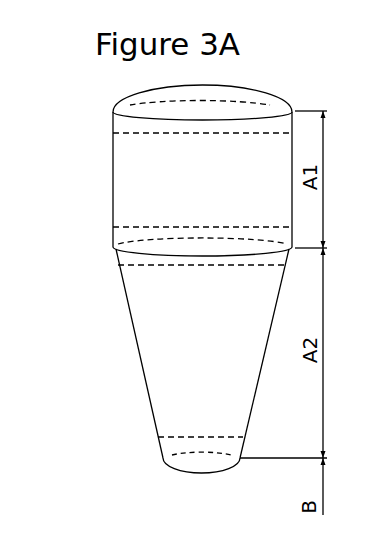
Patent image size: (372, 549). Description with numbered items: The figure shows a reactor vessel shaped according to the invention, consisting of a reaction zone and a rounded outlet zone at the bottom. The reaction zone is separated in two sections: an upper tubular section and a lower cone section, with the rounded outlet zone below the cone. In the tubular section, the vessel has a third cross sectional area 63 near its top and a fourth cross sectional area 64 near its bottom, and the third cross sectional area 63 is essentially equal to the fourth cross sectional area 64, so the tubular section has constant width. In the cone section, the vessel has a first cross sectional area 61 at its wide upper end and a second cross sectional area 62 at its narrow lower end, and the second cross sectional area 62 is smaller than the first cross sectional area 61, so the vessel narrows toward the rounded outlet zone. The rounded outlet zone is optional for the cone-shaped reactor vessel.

The first cross sectional area 61 is at (147, 268).
The second cross sectional area 62 is at (177, 435).
The third cross sectional area 63 is at (143, 133).
The fourth cross sectional area 64 is at (140, 227).